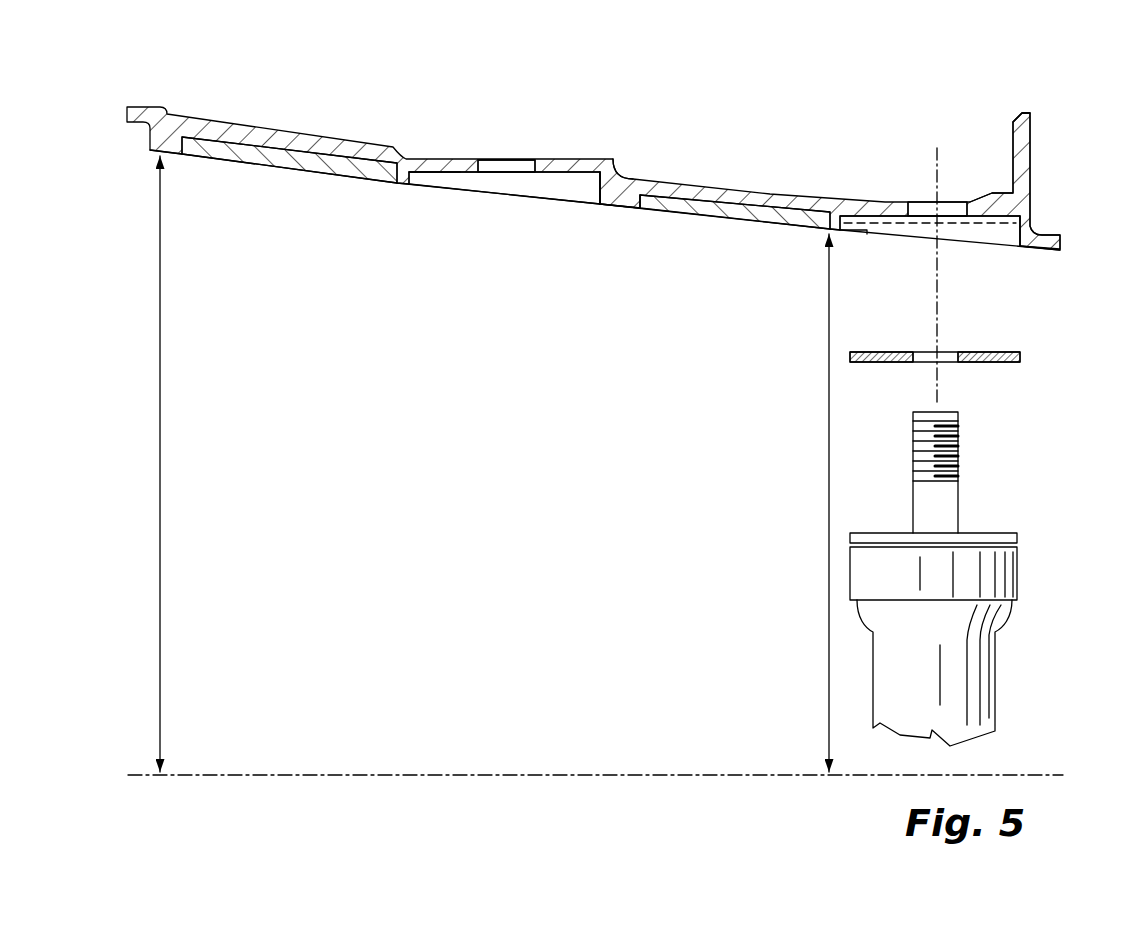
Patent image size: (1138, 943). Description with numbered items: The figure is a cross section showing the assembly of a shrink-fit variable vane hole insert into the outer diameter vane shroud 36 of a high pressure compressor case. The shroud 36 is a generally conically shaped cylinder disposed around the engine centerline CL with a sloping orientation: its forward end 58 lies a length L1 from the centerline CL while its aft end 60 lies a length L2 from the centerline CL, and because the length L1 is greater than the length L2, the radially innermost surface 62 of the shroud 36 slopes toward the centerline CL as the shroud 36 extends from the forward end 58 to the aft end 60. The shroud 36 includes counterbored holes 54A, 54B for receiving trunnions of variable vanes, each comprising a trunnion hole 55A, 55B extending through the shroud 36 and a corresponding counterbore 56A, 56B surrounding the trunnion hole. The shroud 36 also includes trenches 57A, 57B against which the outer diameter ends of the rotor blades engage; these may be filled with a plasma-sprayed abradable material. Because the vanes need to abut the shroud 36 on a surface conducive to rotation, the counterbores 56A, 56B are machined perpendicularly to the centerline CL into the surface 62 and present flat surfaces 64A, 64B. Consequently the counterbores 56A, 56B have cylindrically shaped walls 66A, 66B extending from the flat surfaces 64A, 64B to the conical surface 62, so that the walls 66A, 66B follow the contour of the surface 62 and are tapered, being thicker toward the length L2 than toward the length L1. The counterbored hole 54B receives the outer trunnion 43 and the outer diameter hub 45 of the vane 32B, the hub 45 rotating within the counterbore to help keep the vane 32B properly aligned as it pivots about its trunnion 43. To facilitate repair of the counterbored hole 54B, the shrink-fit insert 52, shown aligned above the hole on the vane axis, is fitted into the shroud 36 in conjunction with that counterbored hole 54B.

The forward end 58 is at (149, 92).
The trench 57A is at (275, 166).
The trench 57B is at (721, 214).
The trunnion hole 55A is at (510, 163).
The trunnion hole 55B is at (918, 207).
The counterbore 56A is at (432, 183).
The counterbore 56B is at (867, 231).
The counterbored hole 54A is at (545, 186).
The counterbored hole 54B is at (905, 222).
The flat surface 64A is at (457, 174).
The flat surface 64B is at (993, 223).
The wall 66A is at (593, 187).
The wall 66B is at (1011, 231).
The radially innermost surface 62 is at (626, 214).
The outer diameter shroud 36 is at (1027, 164).
The aft end 60 is at (1006, 134).
The shrink-fit insert 52 is at (1008, 366).
The outer trunnion 43 is at (953, 502).
The outer diameter hub 45 is at (1000, 575).
The vane 32B is at (1019, 689).
The length L1 is at (162, 537).
The length L2 is at (828, 551).
The engine centerline CL is at (596, 775).